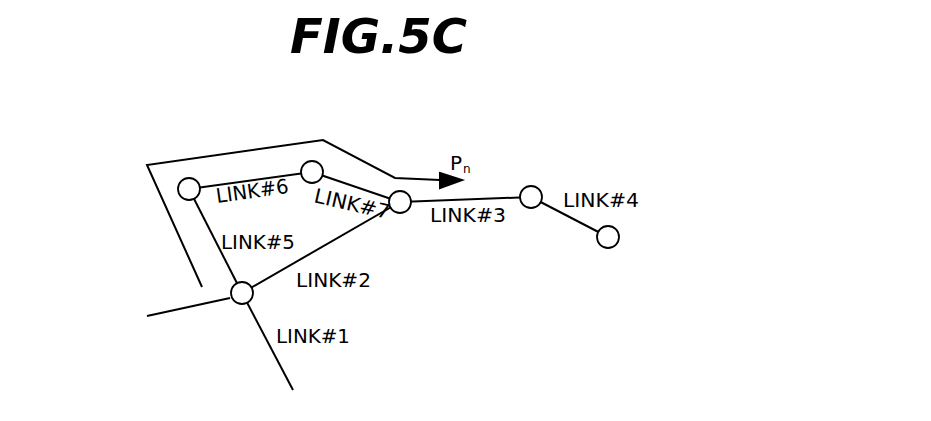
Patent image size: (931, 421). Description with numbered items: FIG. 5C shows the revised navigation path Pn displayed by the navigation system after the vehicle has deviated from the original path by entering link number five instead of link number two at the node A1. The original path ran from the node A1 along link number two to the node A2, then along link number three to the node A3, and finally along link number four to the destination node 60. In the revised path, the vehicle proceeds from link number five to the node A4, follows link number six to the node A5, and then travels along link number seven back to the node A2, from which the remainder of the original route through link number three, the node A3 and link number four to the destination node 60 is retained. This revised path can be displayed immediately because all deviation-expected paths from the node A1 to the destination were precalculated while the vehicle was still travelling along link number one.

The node 60 is at (620, 238).
The node A1 is at (234, 304).
The node A2 is at (398, 213).
The node A3 is at (533, 186).
The node A4 is at (193, 180).
The node A5 is at (322, 164).